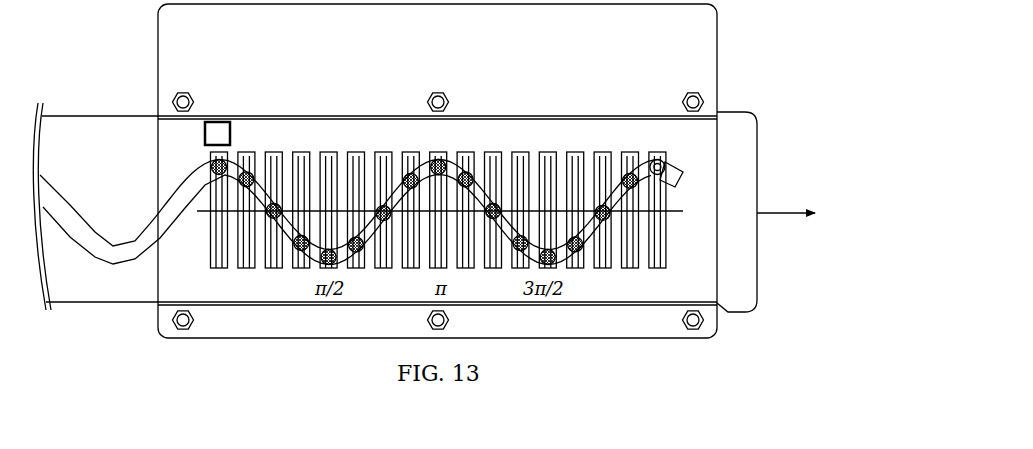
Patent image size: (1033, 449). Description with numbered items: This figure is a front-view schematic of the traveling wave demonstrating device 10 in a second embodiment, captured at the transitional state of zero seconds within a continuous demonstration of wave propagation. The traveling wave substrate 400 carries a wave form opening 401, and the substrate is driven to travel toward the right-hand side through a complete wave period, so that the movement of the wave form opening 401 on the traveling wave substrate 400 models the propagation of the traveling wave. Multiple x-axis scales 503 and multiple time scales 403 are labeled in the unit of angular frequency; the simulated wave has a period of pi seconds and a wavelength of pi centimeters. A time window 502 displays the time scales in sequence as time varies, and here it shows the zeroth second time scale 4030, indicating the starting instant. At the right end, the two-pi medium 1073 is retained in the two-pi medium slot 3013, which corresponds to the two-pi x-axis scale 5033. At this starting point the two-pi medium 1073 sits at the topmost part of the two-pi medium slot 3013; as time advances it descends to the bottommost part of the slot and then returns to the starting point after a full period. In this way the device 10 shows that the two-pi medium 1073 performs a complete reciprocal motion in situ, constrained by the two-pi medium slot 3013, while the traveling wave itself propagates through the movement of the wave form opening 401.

The traveling wave demonstrating device 10 is at (126, 53).
The traveling wave substrate 400 is at (95, 206).
The wave form opening 401 is at (147, 237).
The time scales 403 is at (98, 136).
The time window 502 is at (215, 120).
The 0th second time scale 4030 is at (226, 120).
The x-axis scales 503 is at (181, 289).
The 2π x-axis scale 5033 is at (642, 292).
The 2π medium slot 3013 is at (655, 152).
The 2π medium 1073 is at (690, 152).